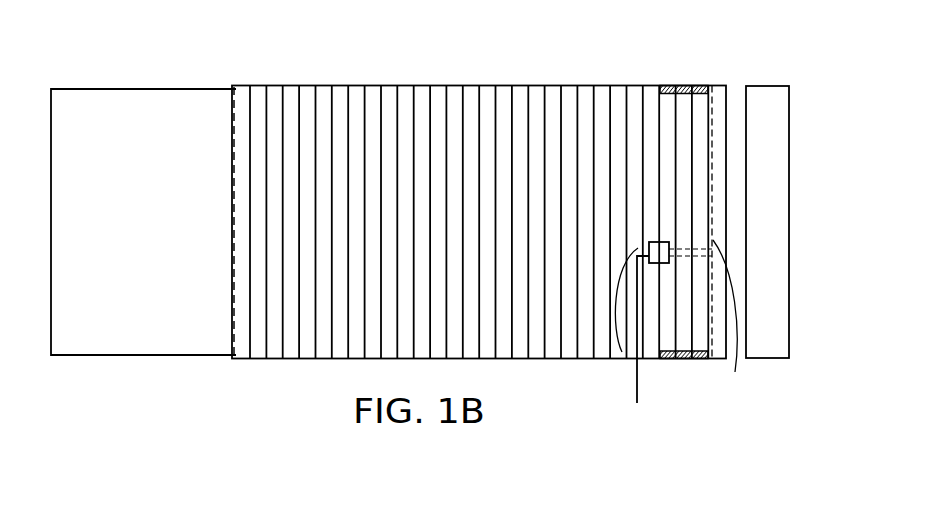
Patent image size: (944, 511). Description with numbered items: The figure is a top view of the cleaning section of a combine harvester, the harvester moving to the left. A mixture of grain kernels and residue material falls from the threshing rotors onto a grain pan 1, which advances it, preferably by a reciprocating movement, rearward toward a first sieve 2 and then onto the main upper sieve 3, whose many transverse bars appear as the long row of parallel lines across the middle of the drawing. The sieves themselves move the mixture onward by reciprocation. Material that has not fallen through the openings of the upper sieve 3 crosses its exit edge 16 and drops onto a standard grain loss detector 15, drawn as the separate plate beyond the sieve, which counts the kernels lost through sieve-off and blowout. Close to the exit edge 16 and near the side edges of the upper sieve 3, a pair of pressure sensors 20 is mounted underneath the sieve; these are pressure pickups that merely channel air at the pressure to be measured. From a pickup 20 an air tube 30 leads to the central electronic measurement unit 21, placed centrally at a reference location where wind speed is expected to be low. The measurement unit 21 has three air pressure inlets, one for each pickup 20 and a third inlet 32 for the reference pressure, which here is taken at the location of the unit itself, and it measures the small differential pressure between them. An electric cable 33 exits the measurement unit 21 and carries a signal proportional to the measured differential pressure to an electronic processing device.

The grain pan 1 is at (145, 92).
The first sieve 2 is at (257, 95).
The main upper sieve 3 is at (503, 90).
The grain loss detector 15 is at (766, 85).
The exit edge 16 is at (727, 110).
The pressure sensor 20 is at (663, 87).
The central electronic measurement unit 21 is at (667, 243).
The air tube 30 is at (735, 372).
The third inlet 32 is at (622, 352).
The electric cable 33 is at (639, 390).